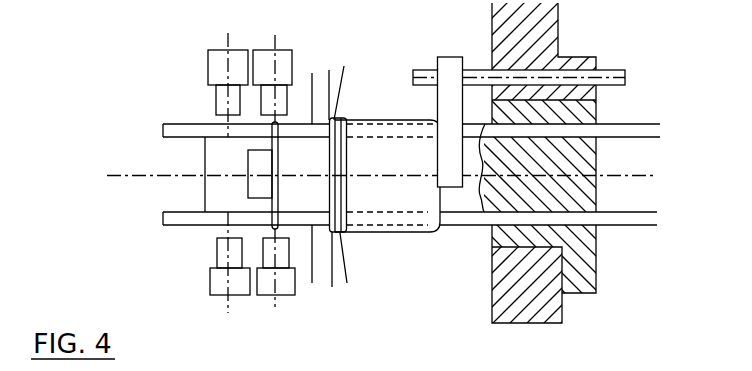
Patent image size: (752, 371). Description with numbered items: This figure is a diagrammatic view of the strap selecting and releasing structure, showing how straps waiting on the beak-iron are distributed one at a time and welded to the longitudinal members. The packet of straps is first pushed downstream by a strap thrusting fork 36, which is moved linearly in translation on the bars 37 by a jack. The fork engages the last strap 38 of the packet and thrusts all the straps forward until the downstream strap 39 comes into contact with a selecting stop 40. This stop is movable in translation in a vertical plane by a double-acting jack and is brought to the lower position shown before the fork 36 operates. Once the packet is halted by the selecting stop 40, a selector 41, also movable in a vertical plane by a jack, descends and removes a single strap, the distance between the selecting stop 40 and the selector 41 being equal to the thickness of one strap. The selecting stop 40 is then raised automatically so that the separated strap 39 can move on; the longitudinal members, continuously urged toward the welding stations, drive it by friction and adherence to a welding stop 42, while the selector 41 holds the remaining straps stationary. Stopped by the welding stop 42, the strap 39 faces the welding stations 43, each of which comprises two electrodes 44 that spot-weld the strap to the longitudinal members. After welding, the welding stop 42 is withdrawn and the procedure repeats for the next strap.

The strap thrusting fork 36 is at (452, 105).
The bars 37 is at (615, 77).
The last strap 38 is at (435, 180).
The downstream strap 39 is at (333, 187).
The selecting stop 40 is at (323, 103).
The selector 41 is at (337, 268).
The welding stop 42 is at (258, 187).
The welding stations 43 is at (267, 283).
The electrodes 44 is at (223, 265).